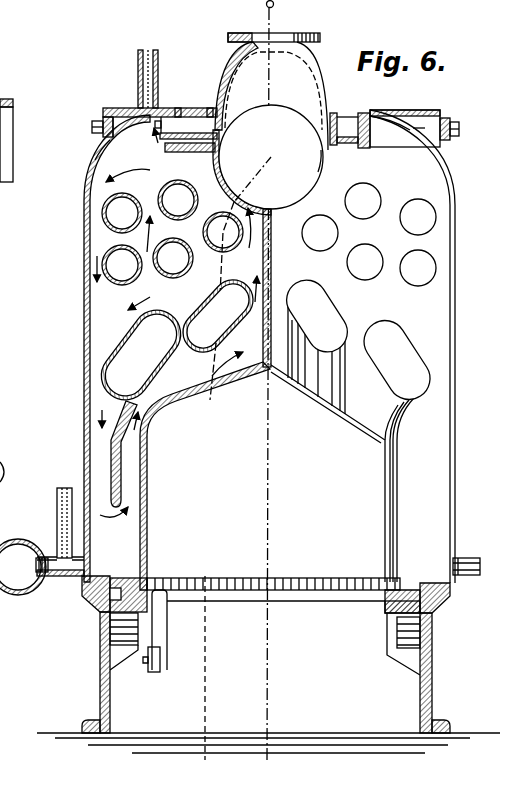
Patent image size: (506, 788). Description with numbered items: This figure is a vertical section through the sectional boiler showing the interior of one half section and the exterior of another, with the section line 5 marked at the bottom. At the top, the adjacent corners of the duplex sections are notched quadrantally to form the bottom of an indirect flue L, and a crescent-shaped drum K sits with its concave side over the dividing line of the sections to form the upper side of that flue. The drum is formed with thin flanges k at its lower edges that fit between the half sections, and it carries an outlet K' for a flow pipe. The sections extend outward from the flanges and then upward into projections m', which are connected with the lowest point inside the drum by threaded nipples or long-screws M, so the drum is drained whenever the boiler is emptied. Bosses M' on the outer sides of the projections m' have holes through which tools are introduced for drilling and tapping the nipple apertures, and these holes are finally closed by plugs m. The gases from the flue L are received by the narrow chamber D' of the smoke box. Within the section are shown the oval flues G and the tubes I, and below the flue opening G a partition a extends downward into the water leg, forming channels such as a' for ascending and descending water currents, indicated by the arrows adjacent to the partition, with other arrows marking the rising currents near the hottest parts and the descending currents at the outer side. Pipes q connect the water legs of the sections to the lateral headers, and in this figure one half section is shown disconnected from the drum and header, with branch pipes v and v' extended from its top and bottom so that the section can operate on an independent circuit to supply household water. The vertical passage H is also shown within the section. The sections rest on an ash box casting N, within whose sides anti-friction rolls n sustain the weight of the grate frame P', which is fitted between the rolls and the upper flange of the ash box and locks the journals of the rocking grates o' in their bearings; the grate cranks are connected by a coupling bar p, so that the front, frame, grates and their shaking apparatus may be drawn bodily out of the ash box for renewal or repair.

The outlet K' is at (261, 45).
The drum K is at (271, 96).
The indirect flue L is at (268, 160).
The flange k is at (321, 151).
The nipple M is at (160, 110).
The branch pipe v' is at (138, 79).
The plug m is at (277, 128).
The upward projection m' is at (234, 138).
The narrow chamber D' is at (12, 165).
The tubes I is at (269, 233).
The flue G is at (265, 341).
The pipe H is at (382, 408).
The partition a is at (94, 454).
The channel a' is at (102, 446).
The branch pipe v is at (56, 523).
The pipe q is at (63, 577).
The ash box casting N is at (100, 676).
The coupling bar p is at (153, 673).
The rocking grate o' is at (273, 581).
The frame P' is at (377, 618).
The anti-friction roll n is at (406, 631).
The boss M' is at (385, 117).
The section line 5 is at (204, 677).